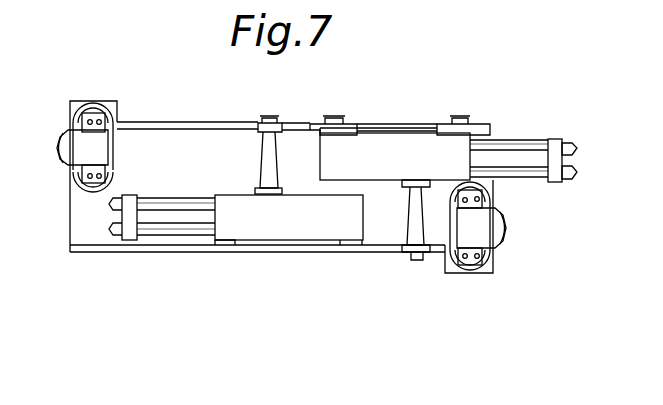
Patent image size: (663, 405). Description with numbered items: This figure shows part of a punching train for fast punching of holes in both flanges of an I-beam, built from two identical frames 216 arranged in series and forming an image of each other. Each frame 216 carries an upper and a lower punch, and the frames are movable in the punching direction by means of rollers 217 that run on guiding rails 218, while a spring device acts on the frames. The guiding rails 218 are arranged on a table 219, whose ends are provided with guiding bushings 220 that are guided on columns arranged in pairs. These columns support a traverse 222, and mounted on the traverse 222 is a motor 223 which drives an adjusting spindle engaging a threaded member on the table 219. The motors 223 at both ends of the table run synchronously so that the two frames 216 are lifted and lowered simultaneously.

The frame 216 is at (418, 147).
The roller 217 is at (344, 118).
The guiding rail 218 is at (237, 122).
The table 219 is at (165, 143).
The guiding bushing 220 is at (509, 271).
The traverse 222 is at (484, 202).
The motor 223 is at (487, 238).